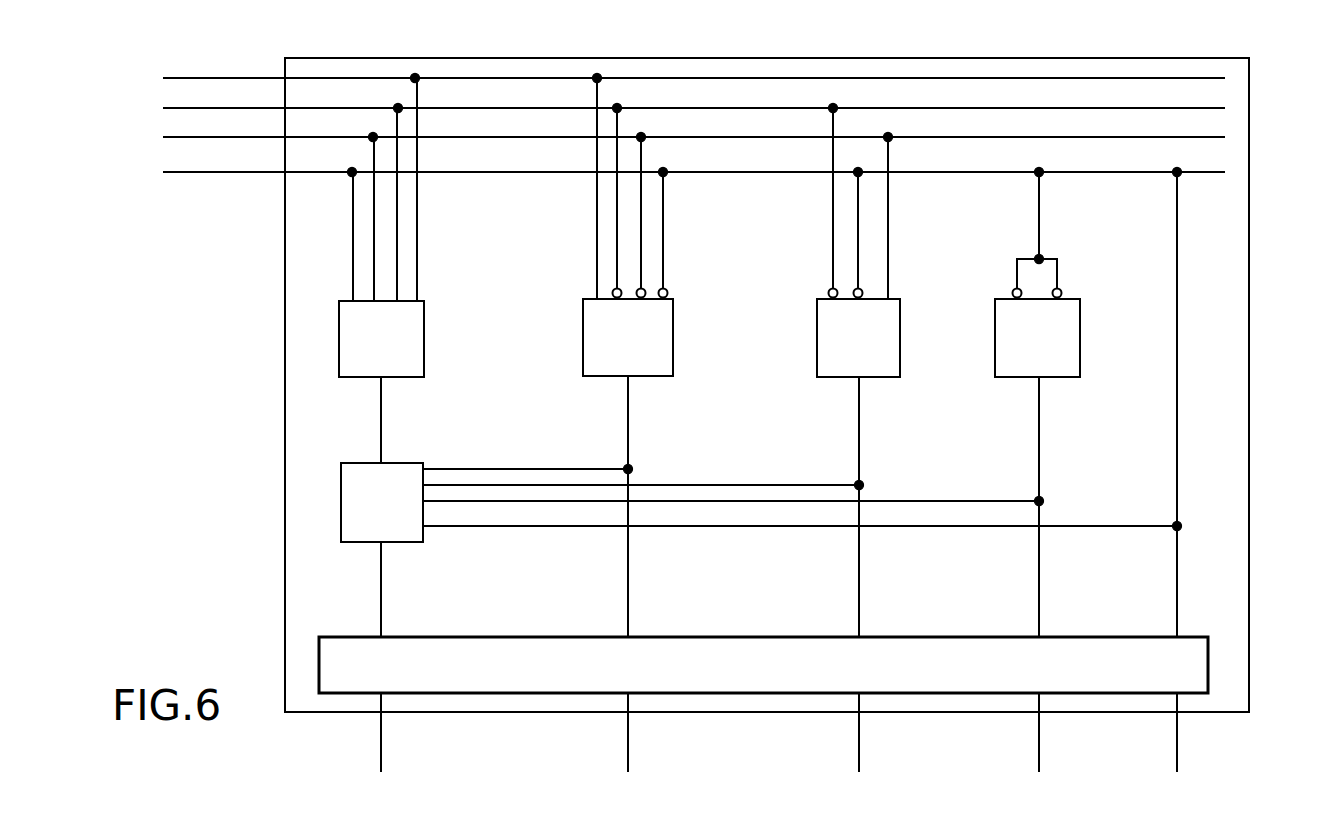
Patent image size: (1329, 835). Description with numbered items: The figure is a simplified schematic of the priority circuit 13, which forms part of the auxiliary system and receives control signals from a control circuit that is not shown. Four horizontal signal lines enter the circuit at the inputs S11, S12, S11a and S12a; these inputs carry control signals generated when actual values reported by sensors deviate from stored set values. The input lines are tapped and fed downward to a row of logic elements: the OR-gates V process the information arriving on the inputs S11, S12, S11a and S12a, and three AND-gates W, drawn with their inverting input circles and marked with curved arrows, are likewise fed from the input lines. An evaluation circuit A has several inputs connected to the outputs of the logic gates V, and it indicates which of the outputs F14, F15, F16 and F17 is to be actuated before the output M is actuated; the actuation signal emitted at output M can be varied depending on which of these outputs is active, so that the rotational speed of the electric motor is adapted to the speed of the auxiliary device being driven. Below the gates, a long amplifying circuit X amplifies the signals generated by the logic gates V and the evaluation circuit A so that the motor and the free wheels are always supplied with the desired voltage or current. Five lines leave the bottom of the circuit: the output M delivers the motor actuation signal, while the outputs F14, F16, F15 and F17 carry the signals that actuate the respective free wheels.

The priority circuit 13 is at (1249, 357).
The input S11 is at (668, 77).
The input S12 is at (668, 109).
The input S11a is at (667, 141).
The input S12a is at (668, 178).
The OR-gate V is at (413, 374).
The AND-gate W is at (690, 299).
The evaluation circuit A is at (408, 536).
The amplifying circuit X is at (728, 648).
The output M is at (398, 663).
The output F14 is at (655, 589).
The output F16 is at (884, 593).
The output F15 is at (1063, 590).
The output F17 is at (1205, 485).